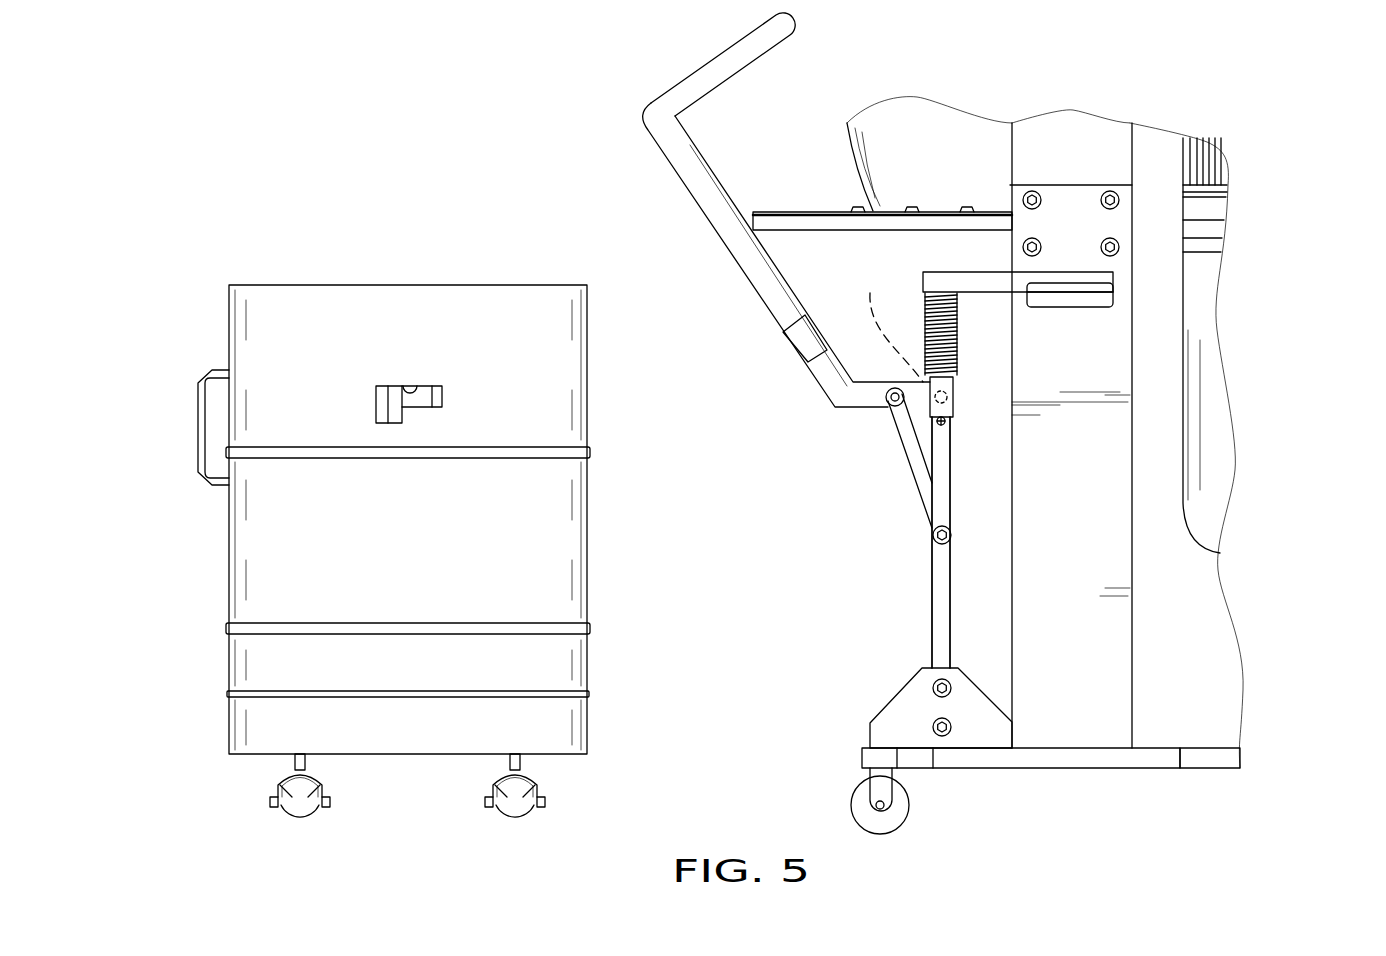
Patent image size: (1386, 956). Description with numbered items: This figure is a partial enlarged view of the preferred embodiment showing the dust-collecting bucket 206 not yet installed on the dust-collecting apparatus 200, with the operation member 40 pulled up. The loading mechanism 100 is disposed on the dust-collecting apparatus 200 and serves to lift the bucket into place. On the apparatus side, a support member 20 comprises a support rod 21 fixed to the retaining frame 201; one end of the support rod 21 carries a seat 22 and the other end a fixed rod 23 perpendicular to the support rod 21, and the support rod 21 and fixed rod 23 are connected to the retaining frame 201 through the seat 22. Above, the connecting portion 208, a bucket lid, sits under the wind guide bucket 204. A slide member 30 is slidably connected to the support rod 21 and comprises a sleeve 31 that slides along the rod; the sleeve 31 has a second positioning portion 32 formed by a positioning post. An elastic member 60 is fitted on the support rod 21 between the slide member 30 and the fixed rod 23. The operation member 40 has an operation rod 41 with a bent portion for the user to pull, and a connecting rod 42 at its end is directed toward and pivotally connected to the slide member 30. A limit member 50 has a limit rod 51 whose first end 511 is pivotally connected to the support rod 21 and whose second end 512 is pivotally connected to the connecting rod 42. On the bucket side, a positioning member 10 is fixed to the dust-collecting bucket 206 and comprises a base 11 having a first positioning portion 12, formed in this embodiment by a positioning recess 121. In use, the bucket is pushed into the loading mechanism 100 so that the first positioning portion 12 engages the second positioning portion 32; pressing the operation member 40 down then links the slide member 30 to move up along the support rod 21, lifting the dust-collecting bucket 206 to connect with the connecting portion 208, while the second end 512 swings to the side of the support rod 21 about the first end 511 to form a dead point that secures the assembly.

The positioning member 10 is at (393, 319).
The base 11 is at (443, 388).
The first positioning portion 12 is at (415, 395).
The positioning recess 121 is at (401, 392).
The support member 20 is at (867, 596).
The support rod 21 is at (942, 572).
The seat 22 is at (885, 727).
The fixed rod 23 is at (1113, 282).
The slide member 30 is at (1075, 460).
The sleeve 31 is at (950, 392).
The second positioning portion 32 is at (890, 317).
The operation member 40 is at (670, 183).
The operation rod 41 is at (690, 80).
The connecting rod 42 is at (757, 270).
The limit member 50 is at (841, 482).
The limit rod 51 is at (910, 470).
The first end 511 is at (930, 518).
The second end 512 is at (886, 402).
The elastic member 60 is at (970, 334).
The loading mechanism 100 is at (695, 210).
The dust-collecting apparatus 200 is at (1145, 153).
The retaining frame 201 is at (1078, 122).
The wind guide bucket 204 is at (920, 123).
The dust-collecting bucket 206 is at (268, 310).
The connecting portion 208 is at (778, 220).